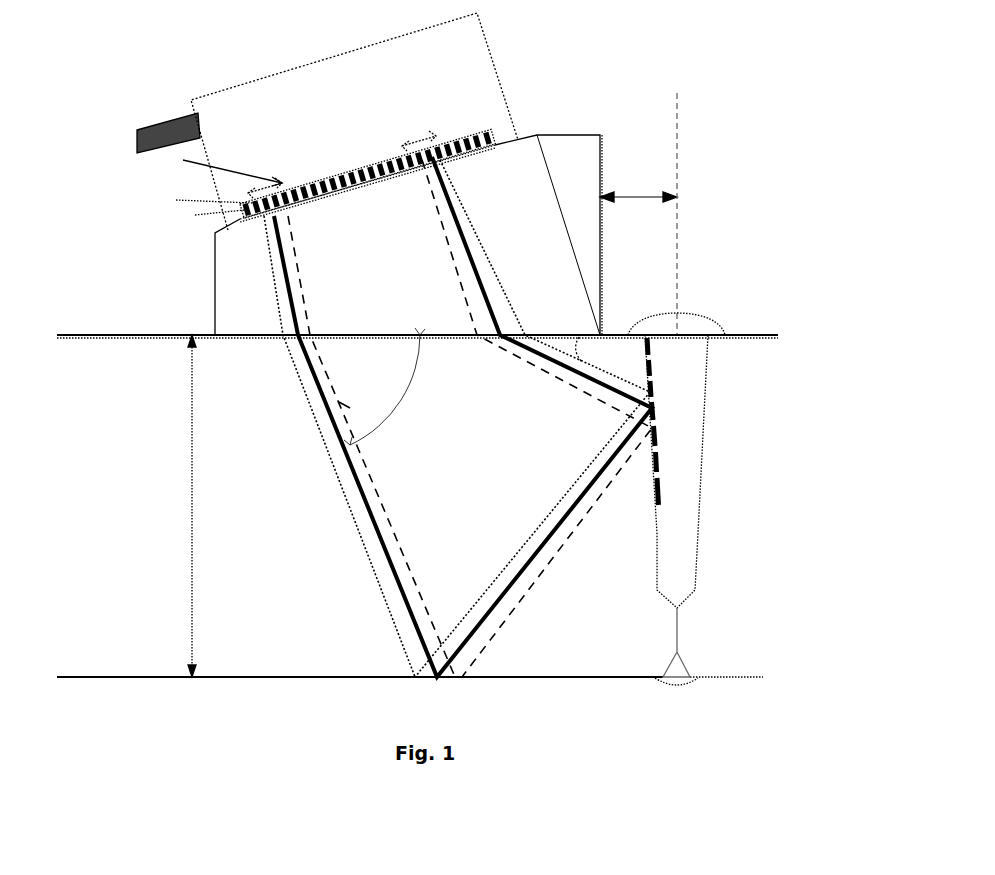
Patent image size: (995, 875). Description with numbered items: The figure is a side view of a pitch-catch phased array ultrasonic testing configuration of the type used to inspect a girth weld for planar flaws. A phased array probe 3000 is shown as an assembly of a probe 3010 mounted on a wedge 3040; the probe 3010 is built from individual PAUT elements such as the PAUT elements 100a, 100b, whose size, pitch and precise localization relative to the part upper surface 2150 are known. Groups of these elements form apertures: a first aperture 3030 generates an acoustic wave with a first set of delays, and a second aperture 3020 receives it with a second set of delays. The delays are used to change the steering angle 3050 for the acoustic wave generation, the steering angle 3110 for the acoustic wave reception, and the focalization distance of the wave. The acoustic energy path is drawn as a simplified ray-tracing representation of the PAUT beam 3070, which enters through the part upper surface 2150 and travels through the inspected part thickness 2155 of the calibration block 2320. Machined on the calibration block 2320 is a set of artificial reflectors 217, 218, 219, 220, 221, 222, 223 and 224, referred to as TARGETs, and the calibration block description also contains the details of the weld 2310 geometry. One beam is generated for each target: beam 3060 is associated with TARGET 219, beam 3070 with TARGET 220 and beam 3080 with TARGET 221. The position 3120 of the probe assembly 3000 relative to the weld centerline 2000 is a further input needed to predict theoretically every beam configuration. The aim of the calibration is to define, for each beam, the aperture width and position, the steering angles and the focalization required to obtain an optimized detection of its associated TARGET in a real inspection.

The phased array probe assembly 3000 is at (493, 62).
The probe 3010 is at (495, 130).
The second aperture 3020 is at (428, 137).
The first aperture 3030 is at (183, 160).
The PAUT element 100b is at (176, 200).
The PAUT element 100a is at (195, 215).
The wedge 3040 is at (643, 196).
The position of the probe assembly 3120 is at (680, 190).
The weld centerline 2000 is at (677, 272).
The part upper surface 2150 is at (137, 333).
The inspected part thickness 2155 is at (180, 506).
The calibration block 2320 is at (123, 490).
The steering angle for acoustic wave generation 3050 is at (400, 410).
The beam 3060 is at (345, 405).
The PAUT beam 3070 is at (350, 455).
The beam 3080 is at (357, 528).
The steering angle for acoustic wave reception 3110 is at (578, 345).
The reflector 217 is at (650, 346).
The reflector 218 is at (651, 366).
The reflector 219 is at (652, 388).
The reflector 220 is at (653, 414).
The reflector 221 is at (655, 438).
The reflector 222 is at (657, 462).
The reflector 223 is at (658, 488).
The reflector 224 is at (658, 505).
The weld 2310 is at (676, 572).